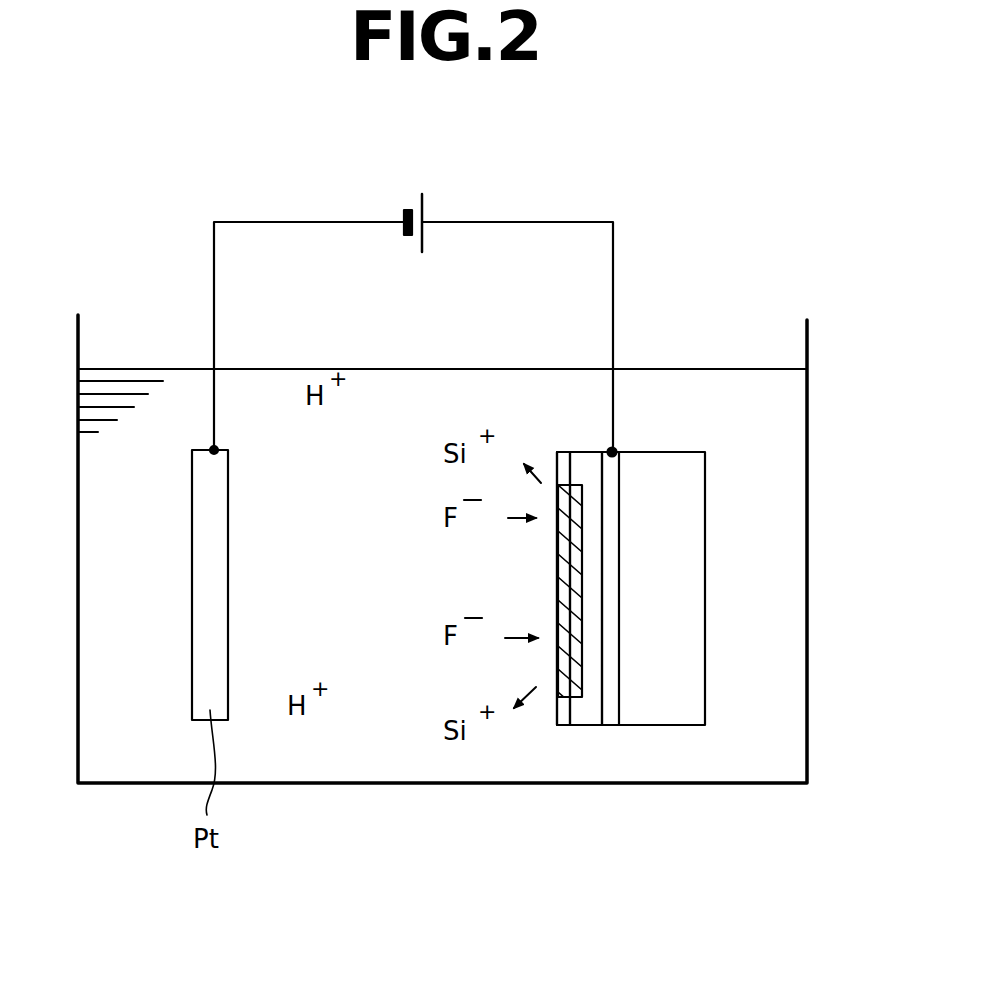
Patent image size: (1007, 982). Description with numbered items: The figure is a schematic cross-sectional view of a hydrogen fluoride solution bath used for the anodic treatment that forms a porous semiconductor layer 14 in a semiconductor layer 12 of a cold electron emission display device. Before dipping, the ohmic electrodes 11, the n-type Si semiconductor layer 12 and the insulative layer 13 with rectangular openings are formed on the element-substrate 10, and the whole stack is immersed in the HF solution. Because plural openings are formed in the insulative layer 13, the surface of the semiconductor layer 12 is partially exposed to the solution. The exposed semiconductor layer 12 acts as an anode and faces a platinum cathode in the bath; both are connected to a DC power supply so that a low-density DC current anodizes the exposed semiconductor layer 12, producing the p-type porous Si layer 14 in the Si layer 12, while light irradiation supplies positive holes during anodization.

The element-substrate 10 is at (690, 530).
The ohmic electrodes 11 is at (614, 452).
The semiconductor layer 12 is at (586, 452).
The insulative layer 13 is at (562, 452).
The porous semiconductor layer 14 is at (557, 562).